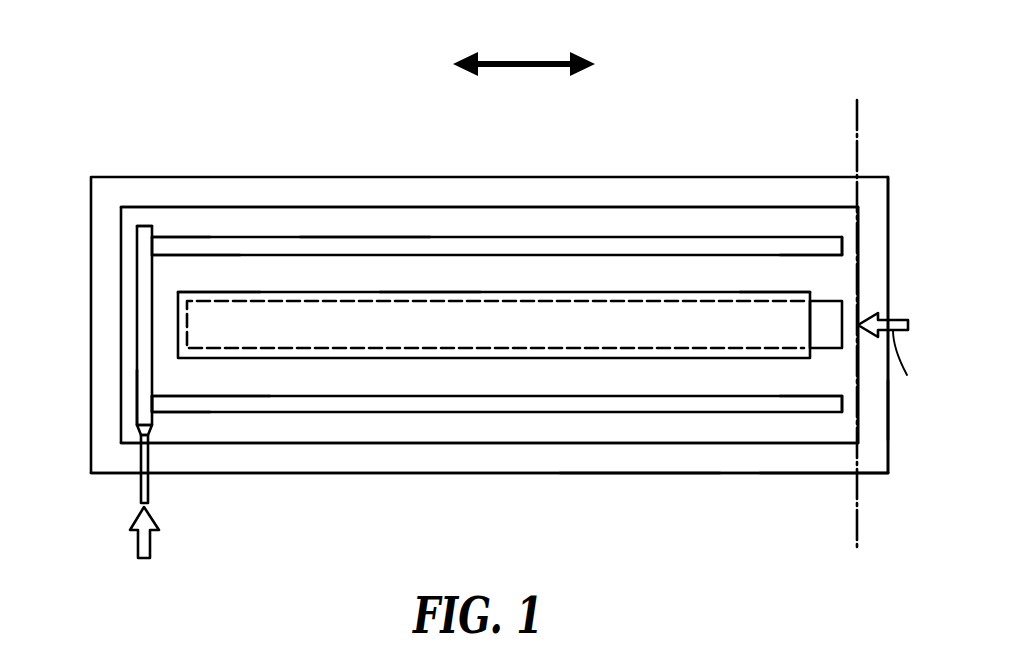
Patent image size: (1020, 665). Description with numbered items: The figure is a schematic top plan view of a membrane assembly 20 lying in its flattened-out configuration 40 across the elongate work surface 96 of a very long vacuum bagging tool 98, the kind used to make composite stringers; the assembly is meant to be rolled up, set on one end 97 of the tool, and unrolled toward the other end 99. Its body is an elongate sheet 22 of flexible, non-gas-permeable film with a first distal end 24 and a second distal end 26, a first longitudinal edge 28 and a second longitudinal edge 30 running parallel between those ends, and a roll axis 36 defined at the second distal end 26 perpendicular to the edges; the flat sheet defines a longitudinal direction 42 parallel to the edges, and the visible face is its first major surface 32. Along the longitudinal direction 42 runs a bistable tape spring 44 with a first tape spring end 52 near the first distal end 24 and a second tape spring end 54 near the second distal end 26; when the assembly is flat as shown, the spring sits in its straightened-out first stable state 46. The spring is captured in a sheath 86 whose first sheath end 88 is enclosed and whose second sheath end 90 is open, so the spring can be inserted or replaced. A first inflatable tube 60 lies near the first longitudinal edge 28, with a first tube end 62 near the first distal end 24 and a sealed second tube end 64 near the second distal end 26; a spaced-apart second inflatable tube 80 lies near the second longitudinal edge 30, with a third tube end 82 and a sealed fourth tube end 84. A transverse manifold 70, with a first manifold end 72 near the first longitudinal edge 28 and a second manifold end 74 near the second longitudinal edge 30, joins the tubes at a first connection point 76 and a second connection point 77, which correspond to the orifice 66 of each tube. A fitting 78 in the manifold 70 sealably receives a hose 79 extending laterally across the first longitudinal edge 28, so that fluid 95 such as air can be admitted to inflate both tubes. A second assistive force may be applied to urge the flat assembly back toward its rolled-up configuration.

The membrane assembly 20 is at (490, 289).
The flattened-out configuration 40 is at (490, 289).
The first stable state 46 is at (202, 88).
The one end 97 is at (103, 197).
The first distal end 24 is at (120, 280).
The second longitudinal edge 30 is at (508, 207).
The second distal end 26 is at (862, 238).
The other end 99 is at (868, 404).
The first longitudinal edge 28 is at (506, 443).
The elongate work surface 96 is at (605, 452).
The vacuum bagging tool 98 is at (845, 473).
The roll axis 36 is at (858, 135).
The elongate sheet 22 is at (497, 194).
The first major surface 32 is at (595, 223).
The second connection point 77 is at (160, 247).
The third tube end 82 is at (192, 247).
The second inflatable tube 80 is at (360, 247).
The fourth tube end 84 is at (826, 248).
The manifold 70 is at (143, 316).
The second manifold end 74 is at (128, 230).
The first manifold end 72 is at (143, 404).
The fitting 78 is at (137, 427).
The hose 79 is at (138, 487).
The fluid 95 is at (143, 542).
The bistable tape spring 44 is at (483, 330).
The first tape spring end 52 is at (220, 326).
The first sheath end 88 is at (210, 297).
The sheath 86 is at (413, 297).
The second sheath end 90 is at (780, 297).
The second tape spring end 54 is at (828, 317).
The first inflatable tube 60 is at (361, 402).
The first tube end 62 is at (193, 402).
The orifice 66 is at (212, 474).
The first connection point 76 is at (163, 402).
The second tube end 64 is at (828, 402).
The longitudinal direction 42 is at (523, 62).